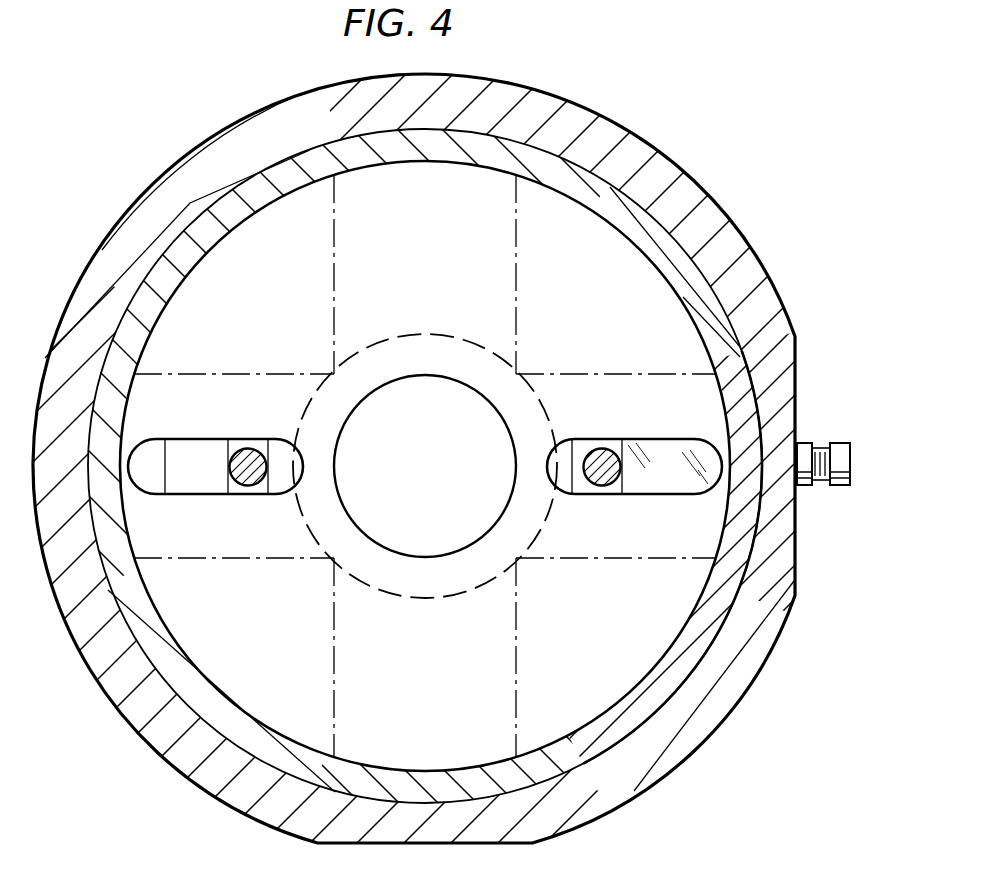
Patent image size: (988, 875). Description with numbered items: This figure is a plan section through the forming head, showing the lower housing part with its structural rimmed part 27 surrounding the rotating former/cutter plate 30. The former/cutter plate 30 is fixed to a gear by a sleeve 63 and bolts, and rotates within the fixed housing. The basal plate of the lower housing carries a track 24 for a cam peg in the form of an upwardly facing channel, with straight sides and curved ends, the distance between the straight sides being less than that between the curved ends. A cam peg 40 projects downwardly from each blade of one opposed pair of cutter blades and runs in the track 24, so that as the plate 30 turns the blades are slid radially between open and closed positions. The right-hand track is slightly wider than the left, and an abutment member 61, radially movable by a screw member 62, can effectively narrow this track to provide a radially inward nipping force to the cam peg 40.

The track 24 is at (225, 482).
The structural rimmed part 27 is at (673, 195).
The former/cutter plate 30 is at (553, 173).
The cam peg 40 is at (247, 462).
The abutment member 61 is at (666, 477).
The screw member 62 is at (822, 486).
The sleeve 63 is at (413, 598).